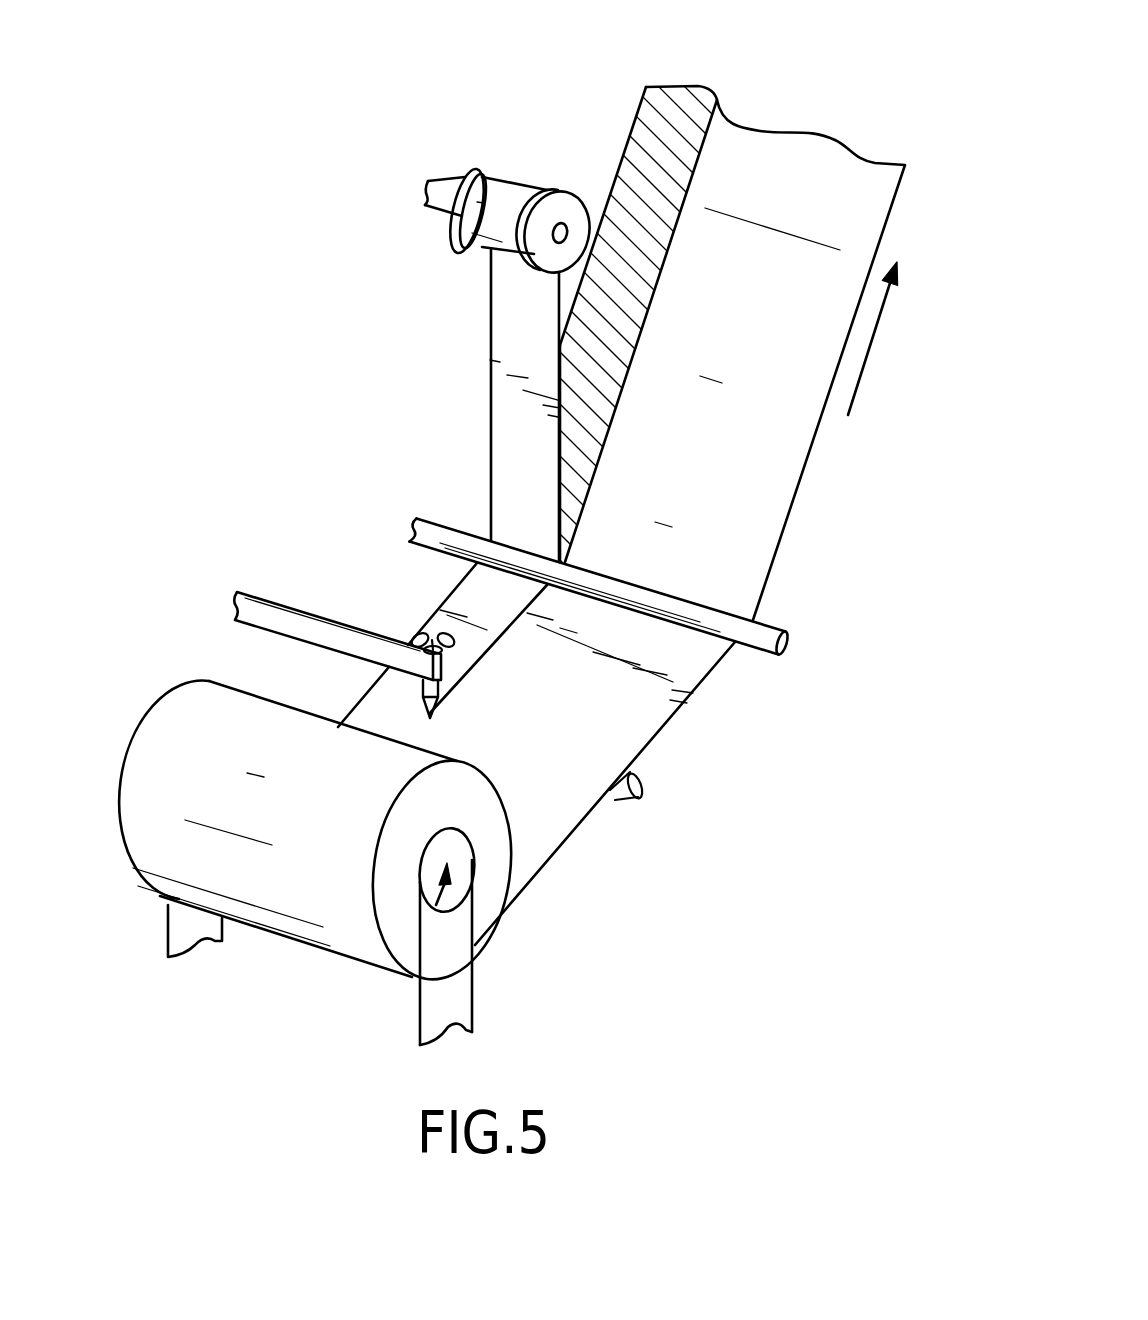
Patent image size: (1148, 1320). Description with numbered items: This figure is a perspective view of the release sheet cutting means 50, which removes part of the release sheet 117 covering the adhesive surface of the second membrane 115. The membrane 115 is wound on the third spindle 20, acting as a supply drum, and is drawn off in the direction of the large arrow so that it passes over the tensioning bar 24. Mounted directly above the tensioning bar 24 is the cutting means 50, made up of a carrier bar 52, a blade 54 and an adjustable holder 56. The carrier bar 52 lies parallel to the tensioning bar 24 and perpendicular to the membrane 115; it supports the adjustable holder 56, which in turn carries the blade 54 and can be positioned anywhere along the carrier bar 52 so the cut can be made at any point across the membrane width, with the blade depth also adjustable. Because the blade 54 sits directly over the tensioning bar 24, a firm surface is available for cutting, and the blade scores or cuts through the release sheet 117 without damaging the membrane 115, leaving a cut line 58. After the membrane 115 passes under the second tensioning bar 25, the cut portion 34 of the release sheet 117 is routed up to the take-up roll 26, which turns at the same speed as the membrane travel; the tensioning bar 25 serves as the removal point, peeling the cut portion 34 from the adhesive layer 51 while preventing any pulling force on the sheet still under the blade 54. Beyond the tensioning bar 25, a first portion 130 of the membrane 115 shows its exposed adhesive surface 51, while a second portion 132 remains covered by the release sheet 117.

The third spindle 20 is at (420, 948).
The tensioning bar 24 is at (643, 793).
The second tensioning bar 25 is at (790, 642).
The take-up roll 26 is at (530, 195).
The cut portion 34 is at (512, 328).
The release sheet cutting means 50 is at (220, 570).
The adhesive layer 51 is at (641, 172).
The carrier bar 52 is at (294, 600).
The blade 54 is at (434, 714).
The adjustable holder 56 is at (432, 640).
The cut line 58 is at (490, 658).
The second membrane 115 is at (160, 750).
The release sheet 117 is at (867, 217).
The first portion 130 is at (731, 97).
The second portion 132 is at (908, 156).